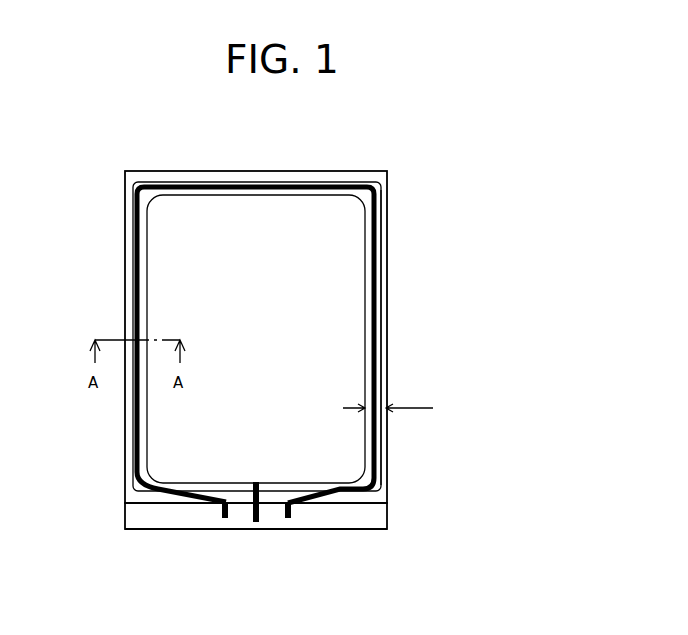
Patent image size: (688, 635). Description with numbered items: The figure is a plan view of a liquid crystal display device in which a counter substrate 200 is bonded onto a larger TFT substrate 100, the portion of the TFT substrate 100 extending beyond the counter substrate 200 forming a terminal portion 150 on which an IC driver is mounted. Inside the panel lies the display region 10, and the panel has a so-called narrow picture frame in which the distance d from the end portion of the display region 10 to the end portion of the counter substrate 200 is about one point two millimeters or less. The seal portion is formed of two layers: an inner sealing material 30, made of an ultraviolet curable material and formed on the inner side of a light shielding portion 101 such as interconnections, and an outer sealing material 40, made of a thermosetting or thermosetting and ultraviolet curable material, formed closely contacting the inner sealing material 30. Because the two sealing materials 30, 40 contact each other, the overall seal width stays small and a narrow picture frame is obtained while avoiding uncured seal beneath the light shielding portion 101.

The display region 10 is at (335, 246).
The inner sealing material 30 is at (340, 195).
The outer sealing material 40 is at (233, 183).
The TFT substrate 100 is at (387, 512).
The light shielding portion 101 is at (377, 433).
The terminal portion 150 is at (328, 523).
The counter substrate 200 is at (387, 323).
The distance from display region end to counter substrate end d is at (388, 396).